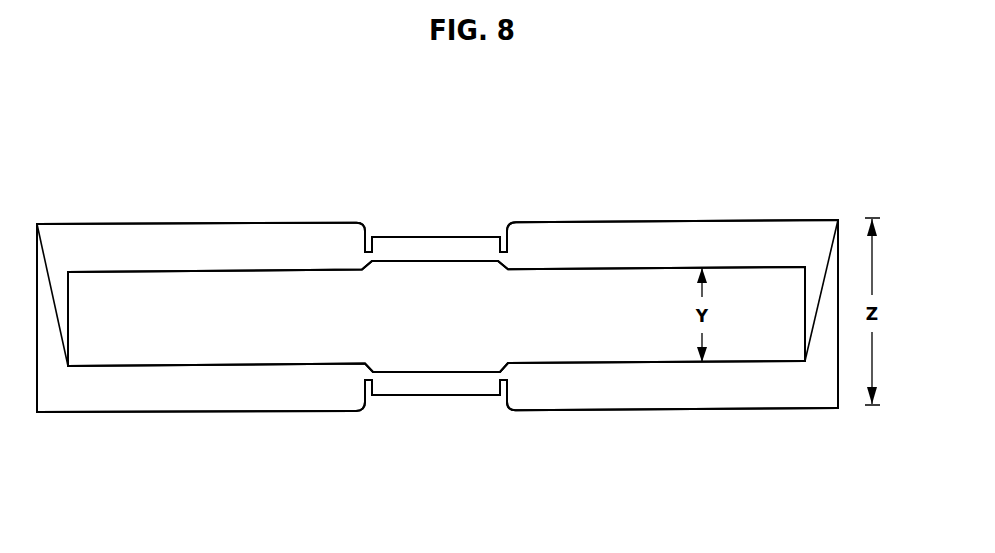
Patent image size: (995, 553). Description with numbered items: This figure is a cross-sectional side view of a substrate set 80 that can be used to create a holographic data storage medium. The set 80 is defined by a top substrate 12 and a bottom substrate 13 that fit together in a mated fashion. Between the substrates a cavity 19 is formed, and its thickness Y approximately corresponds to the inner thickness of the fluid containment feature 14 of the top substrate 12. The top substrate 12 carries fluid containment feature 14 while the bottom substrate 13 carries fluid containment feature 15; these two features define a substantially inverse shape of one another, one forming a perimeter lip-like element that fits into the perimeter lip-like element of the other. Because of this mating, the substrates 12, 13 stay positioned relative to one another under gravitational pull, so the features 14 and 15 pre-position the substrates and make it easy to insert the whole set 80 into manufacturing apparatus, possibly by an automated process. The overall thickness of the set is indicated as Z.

The substrate set 80 is at (577, 178).
The top substrate 12 is at (311, 236).
The bottom substrate 13 is at (593, 392).
The fluid containment feature 14 is at (815, 293).
The fluid containment feature 15 is at (825, 313).
The cavity 19 is at (210, 326).